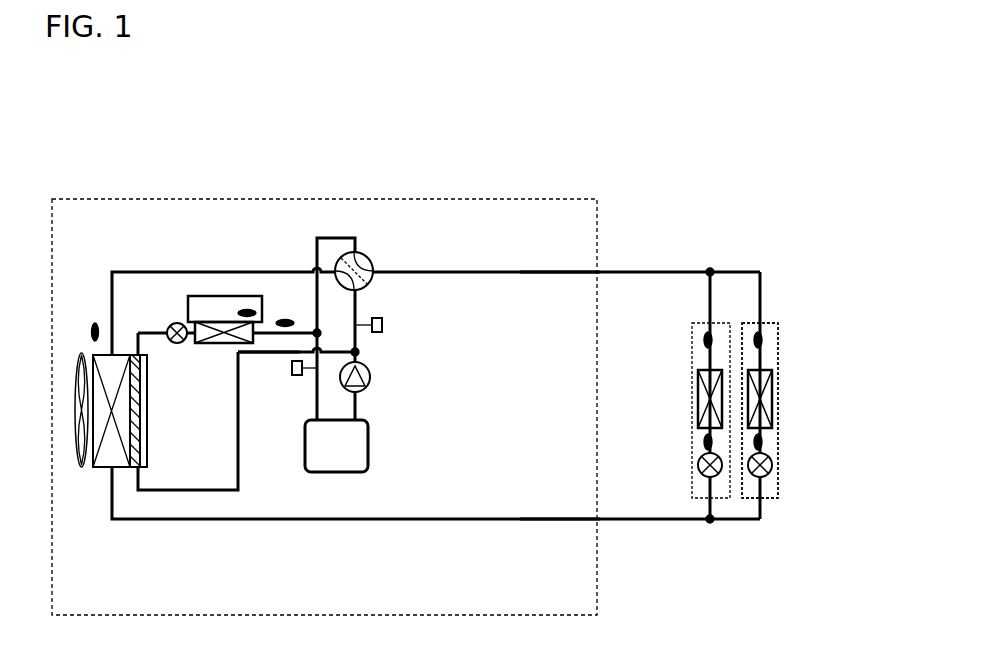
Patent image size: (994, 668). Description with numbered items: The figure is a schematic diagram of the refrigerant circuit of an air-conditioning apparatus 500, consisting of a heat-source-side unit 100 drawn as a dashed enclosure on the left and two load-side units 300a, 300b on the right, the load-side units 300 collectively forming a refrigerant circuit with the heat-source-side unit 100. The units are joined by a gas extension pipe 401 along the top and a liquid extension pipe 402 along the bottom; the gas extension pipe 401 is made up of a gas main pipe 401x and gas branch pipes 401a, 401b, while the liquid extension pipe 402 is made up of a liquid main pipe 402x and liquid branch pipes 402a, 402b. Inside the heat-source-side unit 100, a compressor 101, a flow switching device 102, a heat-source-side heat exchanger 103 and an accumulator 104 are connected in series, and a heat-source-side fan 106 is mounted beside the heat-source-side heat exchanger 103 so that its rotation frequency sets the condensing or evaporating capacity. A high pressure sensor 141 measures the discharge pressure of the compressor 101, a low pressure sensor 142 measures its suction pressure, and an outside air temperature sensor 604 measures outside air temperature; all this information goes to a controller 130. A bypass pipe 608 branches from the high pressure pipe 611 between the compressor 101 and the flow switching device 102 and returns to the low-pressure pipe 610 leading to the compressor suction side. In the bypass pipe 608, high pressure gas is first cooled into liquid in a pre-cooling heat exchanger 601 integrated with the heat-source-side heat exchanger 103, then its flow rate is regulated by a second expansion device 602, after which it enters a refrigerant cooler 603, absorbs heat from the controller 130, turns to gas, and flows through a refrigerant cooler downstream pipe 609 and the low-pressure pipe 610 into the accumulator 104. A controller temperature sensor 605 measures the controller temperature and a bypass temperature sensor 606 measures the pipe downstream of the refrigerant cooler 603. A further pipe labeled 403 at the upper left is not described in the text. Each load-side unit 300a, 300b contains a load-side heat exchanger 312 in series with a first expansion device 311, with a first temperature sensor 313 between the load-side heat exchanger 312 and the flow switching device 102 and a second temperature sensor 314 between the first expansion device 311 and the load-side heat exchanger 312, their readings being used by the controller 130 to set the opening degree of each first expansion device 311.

The air-conditioning apparatus 500 is at (506, 146).
The heat-source-side unit 100 is at (113, 199).
The pipe 403 is at (122, 272).
The gas extension pipe 401 is at (503, 269).
The gas main pipe 401x is at (543, 272).
The liquid extension pipe 402 is at (508, 521).
The liquid main pipe 402x is at (536, 520).
The heat-source-side heat exchanger 103 is at (97, 470).
The heat-source-side fan 106 is at (74, 373).
The outside air temperature sensor 604 is at (90, 332).
The second expansion device 602 is at (171, 324).
The controller 130 is at (200, 296).
The refrigerant cooler 603 is at (215, 345).
The controller temperature sensor 605 is at (247, 308).
The bypass temperature sensor 606 is at (287, 318).
The pre-cooling heat exchanger 601 is at (137, 470).
The bypass pipe 608 is at (238, 445).
The refrigerant cooler downstream pipe 609 is at (254, 353).
The low-pressure pipe 610 is at (305, 420).
The high pressure pipe 611 is at (358, 306).
The flow switching device 102 is at (372, 262).
The compressor 101 is at (372, 381).
The high pressure sensor 141 is at (384, 328).
The low pressure sensor 142 is at (296, 378).
The accumulator 104 is at (332, 475).
The gas branch pipe 401a is at (712, 270).
The gas branch pipe 401b is at (763, 270).
The liquid branch pipe 402a is at (712, 522).
The liquid branch pipe 402b is at (762, 522).
The load-side unit 300a is at (692, 325).
The load-side unit 300b is at (780, 325).
The load-side units 300 is at (778, 420).
The first temperature sensor 313 is at (700, 340).
The load-side heat exchanger 312 is at (698, 390).
The second temperature sensor 314 is at (700, 443).
The first expansion device 311 is at (698, 466).